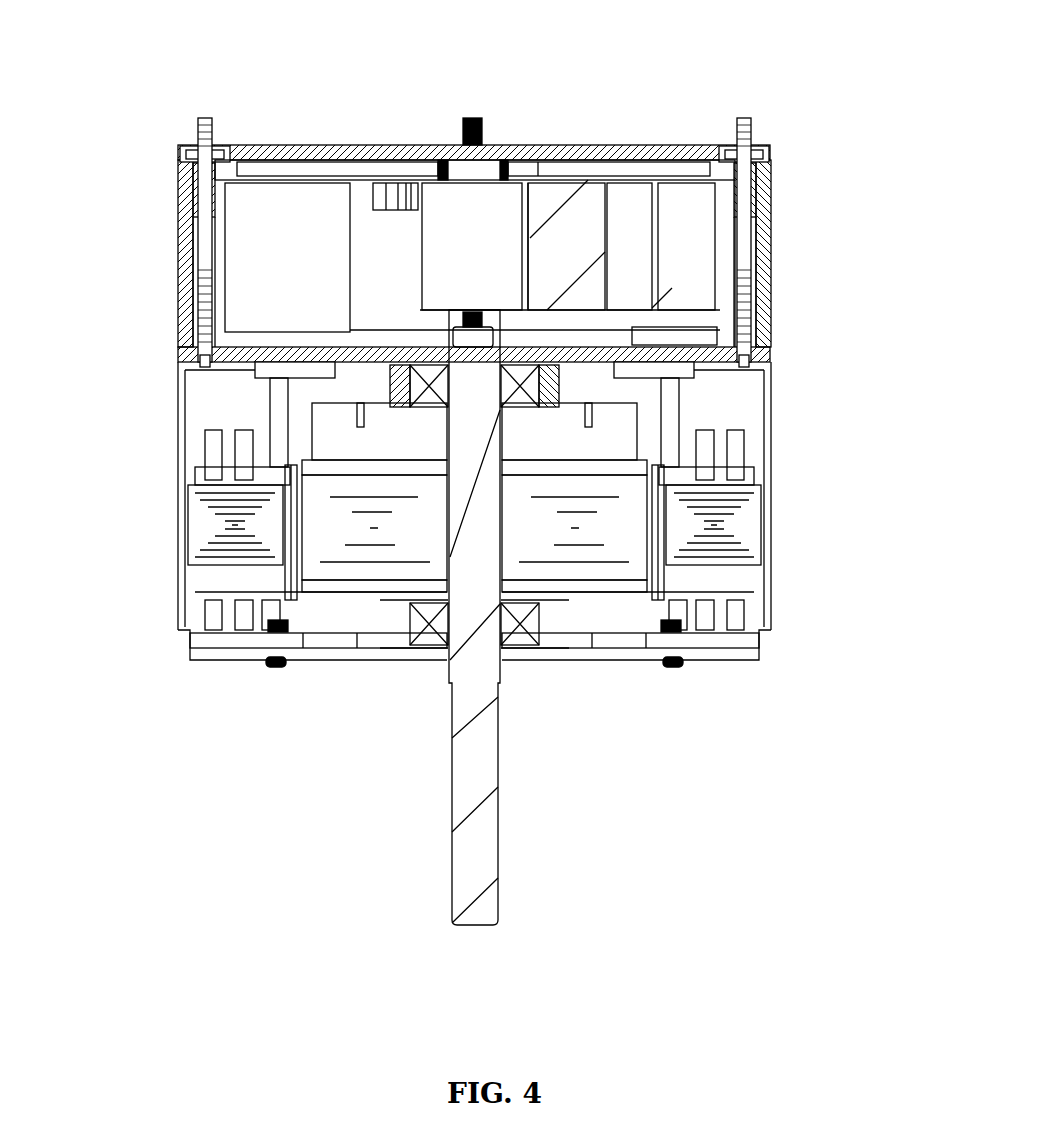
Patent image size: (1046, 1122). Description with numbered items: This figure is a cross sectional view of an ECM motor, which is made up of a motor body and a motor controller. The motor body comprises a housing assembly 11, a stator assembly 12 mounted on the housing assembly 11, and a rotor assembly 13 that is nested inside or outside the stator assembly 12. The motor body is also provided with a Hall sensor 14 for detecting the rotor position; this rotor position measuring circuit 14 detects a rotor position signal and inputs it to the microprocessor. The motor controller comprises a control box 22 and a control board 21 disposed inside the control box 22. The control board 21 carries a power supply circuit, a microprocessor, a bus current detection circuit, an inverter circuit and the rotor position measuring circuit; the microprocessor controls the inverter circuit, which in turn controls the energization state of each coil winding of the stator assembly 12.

The housing assembly 11 is at (542, 514).
The stator assembly 12 is at (528, 524).
The rotor assembly 13 is at (456, 574).
The Hall sensor 14 is at (690, 422).
The control board 21 is at (475, 99).
The control box 22 is at (424, 242).